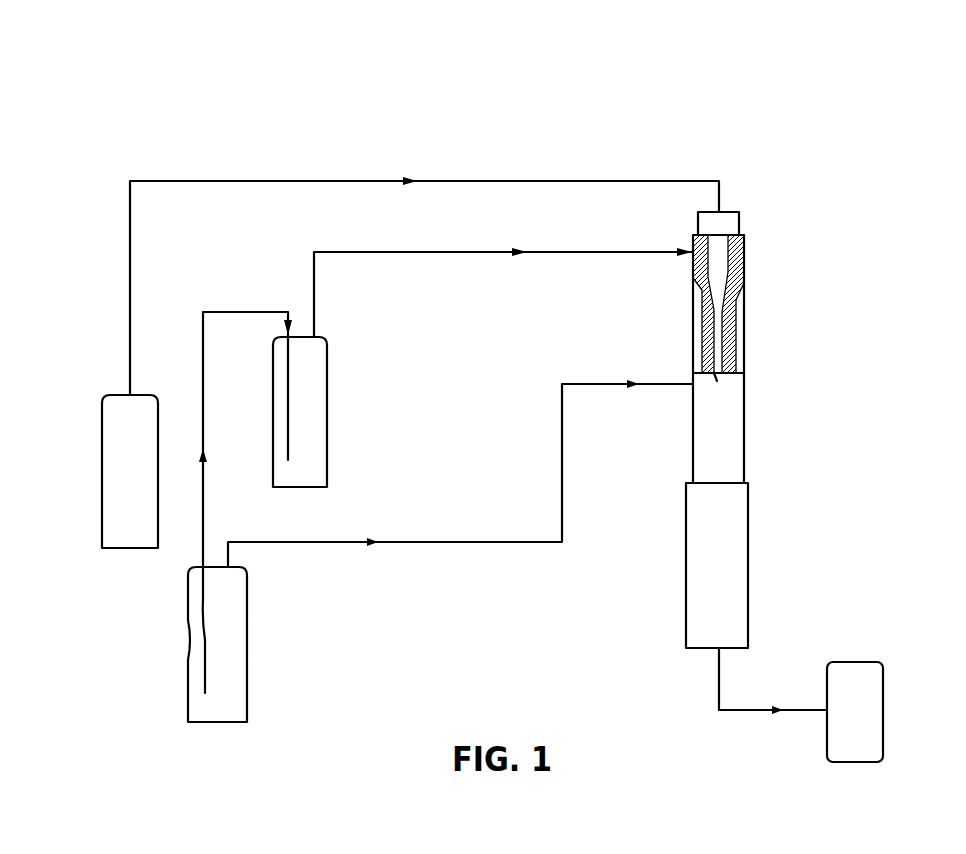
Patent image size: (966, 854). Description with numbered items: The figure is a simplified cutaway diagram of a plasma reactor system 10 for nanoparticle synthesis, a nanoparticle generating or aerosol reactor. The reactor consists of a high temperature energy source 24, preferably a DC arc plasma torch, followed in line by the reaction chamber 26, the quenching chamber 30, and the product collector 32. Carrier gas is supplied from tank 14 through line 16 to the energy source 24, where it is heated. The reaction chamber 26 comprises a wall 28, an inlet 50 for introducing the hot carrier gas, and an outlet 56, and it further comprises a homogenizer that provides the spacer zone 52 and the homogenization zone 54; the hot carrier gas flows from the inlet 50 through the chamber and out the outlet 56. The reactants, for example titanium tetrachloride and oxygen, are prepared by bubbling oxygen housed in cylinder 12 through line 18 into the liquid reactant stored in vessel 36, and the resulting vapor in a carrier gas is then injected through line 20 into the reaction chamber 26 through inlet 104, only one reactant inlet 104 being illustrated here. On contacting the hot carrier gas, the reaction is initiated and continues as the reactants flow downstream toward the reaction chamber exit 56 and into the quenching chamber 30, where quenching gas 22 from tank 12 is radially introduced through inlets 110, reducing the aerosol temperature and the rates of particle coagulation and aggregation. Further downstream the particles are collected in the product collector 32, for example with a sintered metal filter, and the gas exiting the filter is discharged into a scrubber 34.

The plasma reactor system 10 is at (758, 62).
The cylinder 12 is at (227, 682).
The tank 14 is at (120, 492).
The line 16 is at (424, 265).
The line 18 is at (245, 482).
The line 20 is at (503, 274).
The quenching gas 22 is at (460, 473).
The high temperature energy source 24 is at (728, 222).
The reaction chamber 26 is at (745, 300).
The wall 28 is at (728, 342).
The quenching chamber 30 is at (735, 440).
The product collector 32 is at (735, 568).
The scrubber 34 is at (868, 702).
The liquid reactant storage 36 is at (308, 427).
The inlet 50 is at (722, 236).
The spacer zone 52 is at (718, 252).
The homogenization zone 54 is at (718, 320).
The outlet 56 is at (717, 381).
The reactant inlet 104 is at (687, 257).
The inlets 110 is at (674, 390).